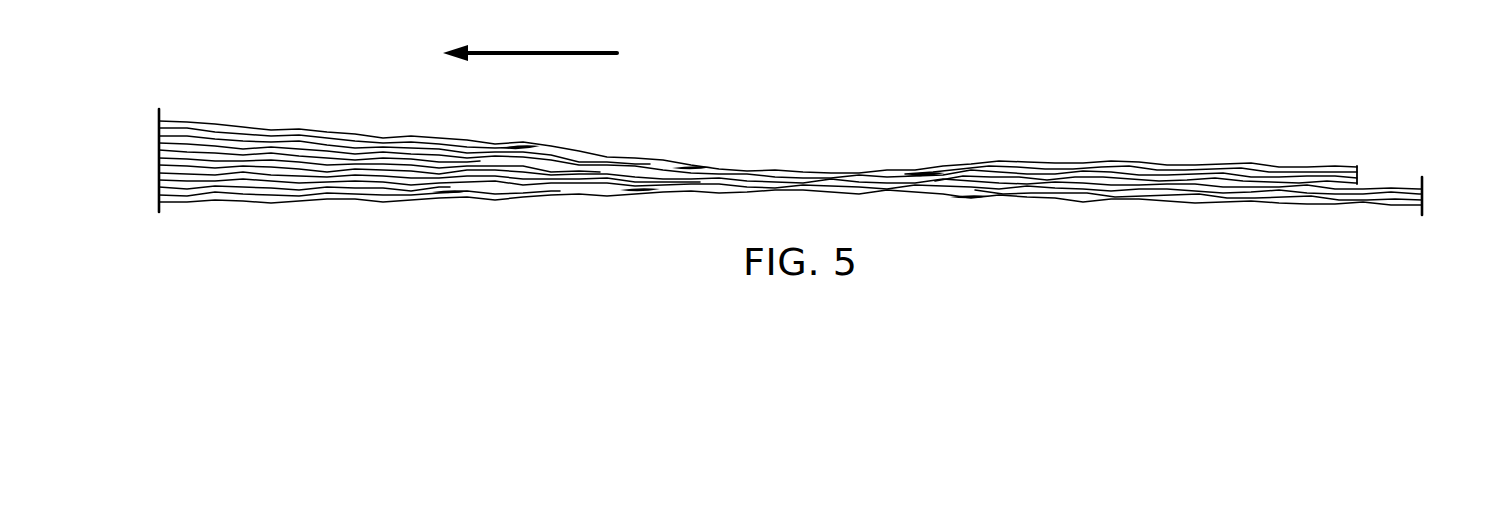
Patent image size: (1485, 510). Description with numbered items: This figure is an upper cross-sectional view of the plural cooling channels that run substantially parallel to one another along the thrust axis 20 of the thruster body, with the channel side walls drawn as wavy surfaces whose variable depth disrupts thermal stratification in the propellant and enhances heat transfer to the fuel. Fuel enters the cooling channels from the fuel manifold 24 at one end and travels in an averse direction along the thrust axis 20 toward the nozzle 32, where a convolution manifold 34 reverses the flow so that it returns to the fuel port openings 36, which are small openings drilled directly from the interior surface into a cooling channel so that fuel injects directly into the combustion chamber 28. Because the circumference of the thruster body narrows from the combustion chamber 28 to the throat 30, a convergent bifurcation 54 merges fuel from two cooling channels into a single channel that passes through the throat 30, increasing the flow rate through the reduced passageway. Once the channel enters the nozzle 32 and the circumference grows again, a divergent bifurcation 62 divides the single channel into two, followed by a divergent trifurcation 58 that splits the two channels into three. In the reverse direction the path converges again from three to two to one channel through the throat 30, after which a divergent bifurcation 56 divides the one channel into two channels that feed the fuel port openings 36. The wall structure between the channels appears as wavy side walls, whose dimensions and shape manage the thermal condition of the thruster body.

The thrust axis 20 is at (541, 49).
The fuel manifold 24 is at (1443, 197).
The combustion chamber 28 is at (1197, 134).
The throat 30 is at (818, 144).
The nozzle 32 is at (257, 92).
The convolution manifold 34 is at (139, 170).
The fuel port openings 36 is at (1365, 145).
The convergent bifurcation 54 is at (693, 165).
The divergent bifurcation 56 is at (910, 166).
The fiber end 58 is at (521, 143).
The divergent bifurcation 62 is at (451, 198).